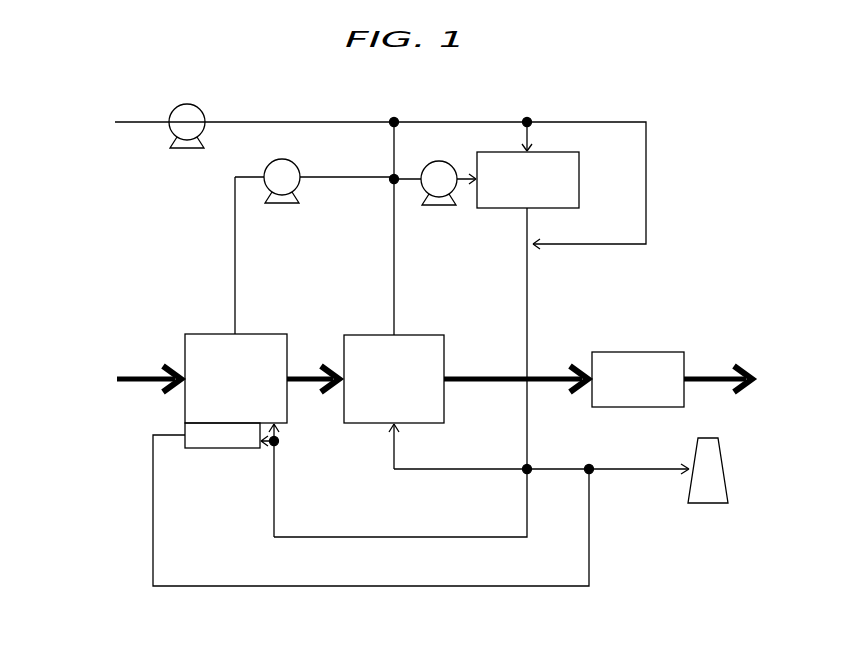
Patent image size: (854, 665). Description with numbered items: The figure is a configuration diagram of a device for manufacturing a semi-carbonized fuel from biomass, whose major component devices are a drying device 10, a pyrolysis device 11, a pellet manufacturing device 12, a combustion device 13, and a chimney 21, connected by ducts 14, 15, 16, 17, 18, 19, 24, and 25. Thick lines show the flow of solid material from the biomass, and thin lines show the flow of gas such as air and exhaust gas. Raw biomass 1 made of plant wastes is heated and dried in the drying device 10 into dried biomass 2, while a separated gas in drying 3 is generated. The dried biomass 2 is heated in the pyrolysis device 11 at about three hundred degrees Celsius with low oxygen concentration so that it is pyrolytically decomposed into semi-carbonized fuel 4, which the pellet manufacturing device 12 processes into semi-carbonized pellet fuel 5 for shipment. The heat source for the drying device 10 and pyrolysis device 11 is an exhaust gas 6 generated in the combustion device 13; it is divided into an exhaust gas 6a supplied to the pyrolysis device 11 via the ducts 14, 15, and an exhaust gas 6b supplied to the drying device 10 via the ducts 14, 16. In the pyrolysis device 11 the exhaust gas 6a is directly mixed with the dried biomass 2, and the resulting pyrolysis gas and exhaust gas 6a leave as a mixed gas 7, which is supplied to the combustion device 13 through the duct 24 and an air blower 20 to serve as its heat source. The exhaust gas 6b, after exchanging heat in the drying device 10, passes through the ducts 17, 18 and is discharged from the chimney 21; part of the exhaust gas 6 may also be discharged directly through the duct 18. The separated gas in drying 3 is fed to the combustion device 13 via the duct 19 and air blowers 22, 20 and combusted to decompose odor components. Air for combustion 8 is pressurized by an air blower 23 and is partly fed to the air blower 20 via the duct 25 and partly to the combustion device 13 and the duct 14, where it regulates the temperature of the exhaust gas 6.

The raw biomass 1 is at (140, 379).
The dried biomass 2 is at (305, 384).
The separated gas in drying 3 is at (235, 248).
The semi-carbonized fuel 4 is at (481, 384).
The semi-carbonized pellet fuel 5 is at (732, 379).
The exhaust gas 6 is at (528, 306).
The exhaust gas 6a is at (394, 452).
The exhaust gas 6b is at (275, 488).
The mixed gas 7 is at (394, 270).
The air for combustion 8 is at (372, 180).
The drying device 10 is at (256, 341).
The pyrolysis device 11 is at (418, 340).
The pellet manufacturing device 12 is at (657, 354).
The combustion device 13 is at (574, 176).
The duct 14 is at (528, 339).
The duct 15 is at (459, 471).
The duct 16 is at (416, 538).
The duct 17 is at (325, 588).
The duct 18 is at (631, 471).
The duct 19 is at (235, 198).
The air blower 20 is at (440, 198).
The chimney 21 is at (716, 460).
The air blower 22 is at (283, 196).
The air blower 23 is at (185, 141).
The duct 24 is at (394, 225).
The duct 25 is at (394, 152).